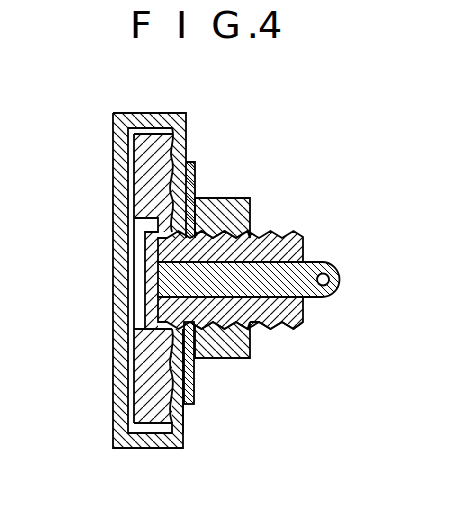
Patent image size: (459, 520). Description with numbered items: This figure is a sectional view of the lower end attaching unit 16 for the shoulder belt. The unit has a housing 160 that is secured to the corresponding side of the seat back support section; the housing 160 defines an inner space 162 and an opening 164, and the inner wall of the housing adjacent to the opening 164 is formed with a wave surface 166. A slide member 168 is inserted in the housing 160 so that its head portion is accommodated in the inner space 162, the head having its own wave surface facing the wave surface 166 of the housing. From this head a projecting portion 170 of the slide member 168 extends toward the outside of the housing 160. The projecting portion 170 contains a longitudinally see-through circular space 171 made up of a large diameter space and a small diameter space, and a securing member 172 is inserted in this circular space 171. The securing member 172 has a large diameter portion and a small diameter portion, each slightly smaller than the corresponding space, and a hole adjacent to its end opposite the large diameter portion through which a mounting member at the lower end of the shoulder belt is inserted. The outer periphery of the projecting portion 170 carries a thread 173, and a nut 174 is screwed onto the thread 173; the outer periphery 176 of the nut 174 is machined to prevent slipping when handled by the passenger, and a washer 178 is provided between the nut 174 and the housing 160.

The lower end attaching unit 16 is at (181, 110).
The housing 160 is at (162, 448).
The inner space 162 is at (136, 449).
The opening 164 is at (168, 340).
The wave surface 166 is at (179, 430).
The slide member 168 is at (140, 398).
The projecting portion 170 is at (299, 313).
The circular space 171 is at (136, 311).
The securing member 172 is at (326, 262).
The thread 173 is at (274, 329).
The nut 174 is at (256, 360).
The outer periphery 176 is at (218, 359).
The washer 178 is at (189, 403).